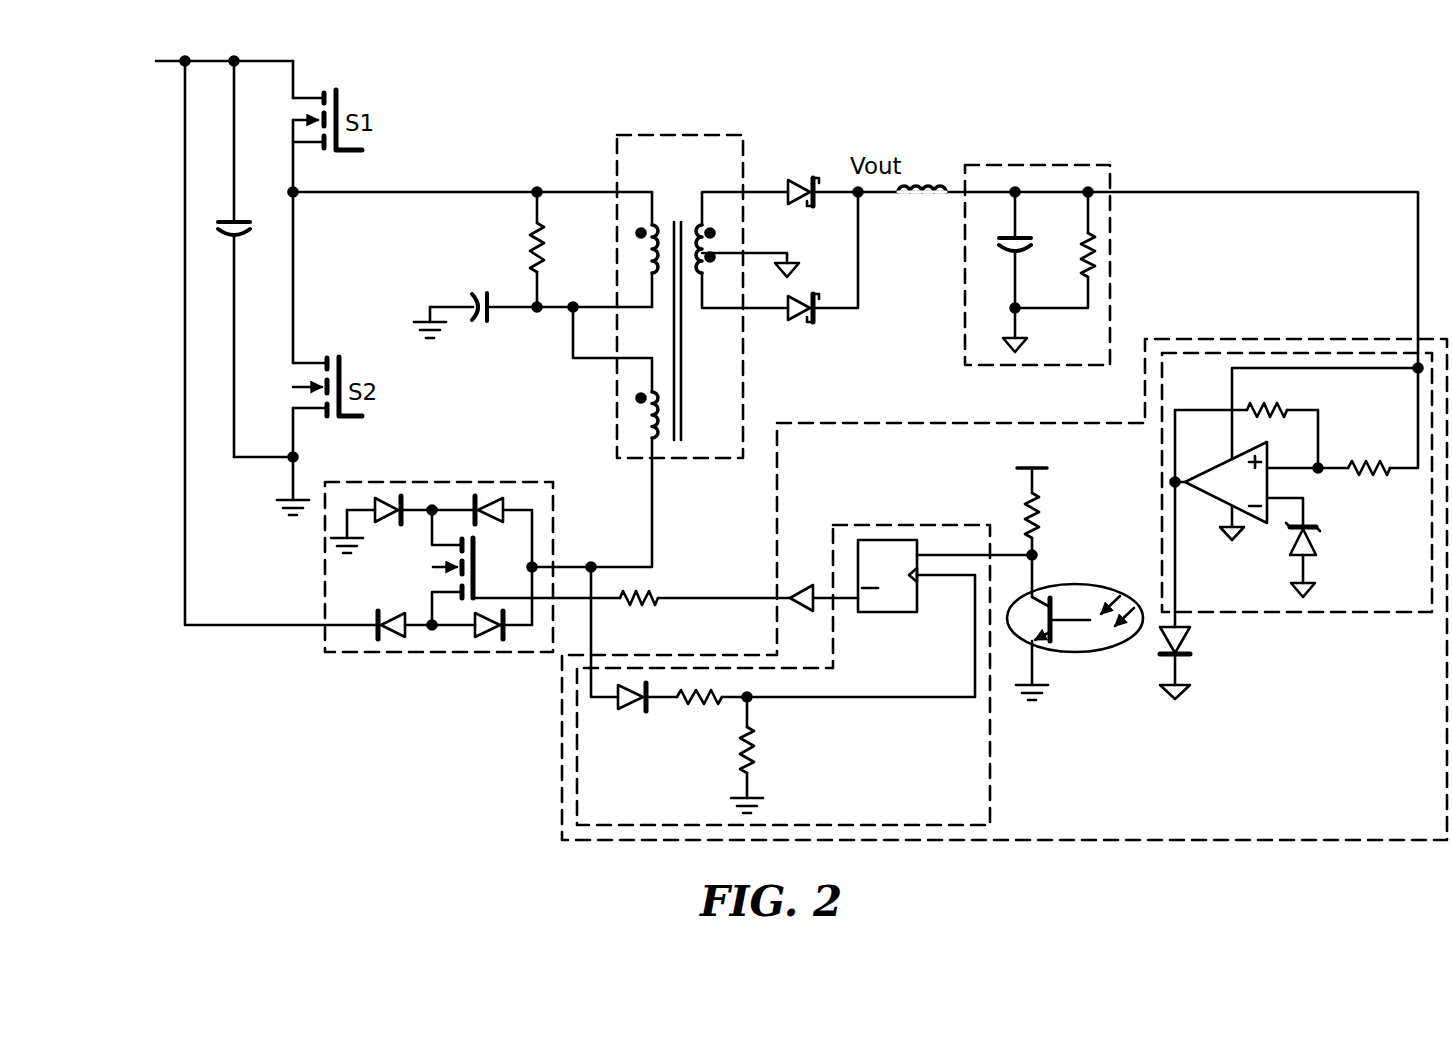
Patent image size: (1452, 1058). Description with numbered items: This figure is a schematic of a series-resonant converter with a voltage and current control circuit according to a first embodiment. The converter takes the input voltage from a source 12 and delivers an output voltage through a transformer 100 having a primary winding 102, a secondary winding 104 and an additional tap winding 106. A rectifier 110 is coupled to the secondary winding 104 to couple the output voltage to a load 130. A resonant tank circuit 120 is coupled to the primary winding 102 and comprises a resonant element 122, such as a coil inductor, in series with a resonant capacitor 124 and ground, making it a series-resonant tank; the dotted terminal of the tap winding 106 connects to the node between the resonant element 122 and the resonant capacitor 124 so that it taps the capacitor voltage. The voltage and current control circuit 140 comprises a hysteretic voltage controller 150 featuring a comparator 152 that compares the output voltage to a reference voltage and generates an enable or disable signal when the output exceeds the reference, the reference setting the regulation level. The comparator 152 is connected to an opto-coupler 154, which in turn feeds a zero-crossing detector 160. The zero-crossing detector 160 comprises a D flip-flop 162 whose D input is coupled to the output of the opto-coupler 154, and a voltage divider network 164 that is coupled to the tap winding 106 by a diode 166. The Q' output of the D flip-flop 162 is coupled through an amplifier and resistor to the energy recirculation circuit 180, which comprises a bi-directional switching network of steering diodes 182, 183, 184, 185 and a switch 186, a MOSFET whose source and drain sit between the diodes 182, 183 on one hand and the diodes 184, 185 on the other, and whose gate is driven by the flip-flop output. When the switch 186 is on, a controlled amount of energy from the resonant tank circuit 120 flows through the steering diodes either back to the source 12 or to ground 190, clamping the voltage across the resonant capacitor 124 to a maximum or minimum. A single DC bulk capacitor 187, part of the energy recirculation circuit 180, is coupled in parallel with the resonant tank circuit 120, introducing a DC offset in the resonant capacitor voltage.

The source 12 is at (147, 76).
The transformer 100 is at (645, 134).
The primary winding 102 is at (668, 222).
The secondary winding 104 is at (693, 276).
The tap winding 106 is at (664, 441).
The rectifier 110 is at (806, 332).
The resonant tank circuit 120 is at (420, 186).
The resonant element 122 is at (527, 250).
The resonant capacitor 124 is at (487, 322).
The load 130 is at (1019, 140).
The voltage and current control circuit 140 is at (1218, 338).
The hysteretic voltage controller 150 is at (1305, 613).
The comparator 152 is at (1306, 483).
The opto-coupler 154 is at (1075, 653).
The zero-crossing detector 160 is at (885, 524).
The D flip-flop 162 is at (885, 613).
The voltage divider network 164 is at (716, 721).
The diode 166 is at (633, 712).
The energy recirculation circuit 180 is at (350, 653).
The steering diode 182 is at (388, 498).
The steering diode 183 is at (488, 498).
The steering diode 184 is at (400, 641).
The steering diode 185 is at (485, 641).
The switch 186 is at (424, 574).
The DC bulk capacitor 187 is at (220, 220).
The ground 190 is at (345, 527).